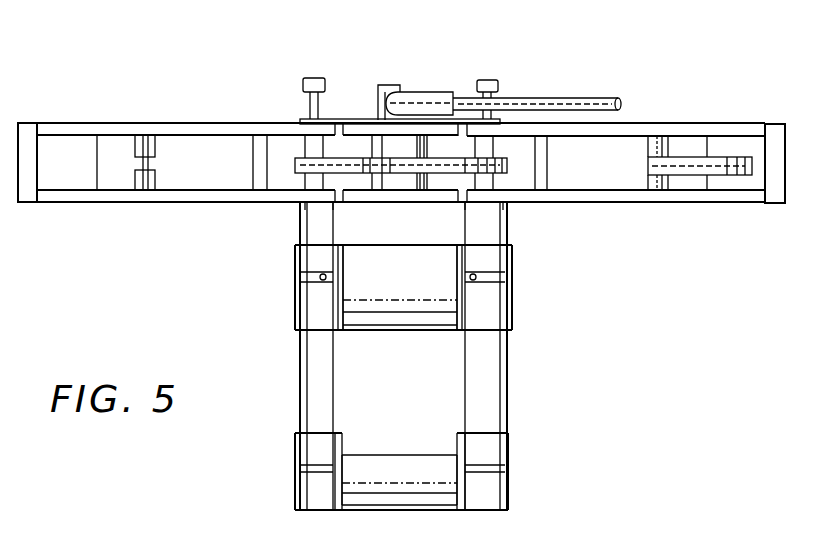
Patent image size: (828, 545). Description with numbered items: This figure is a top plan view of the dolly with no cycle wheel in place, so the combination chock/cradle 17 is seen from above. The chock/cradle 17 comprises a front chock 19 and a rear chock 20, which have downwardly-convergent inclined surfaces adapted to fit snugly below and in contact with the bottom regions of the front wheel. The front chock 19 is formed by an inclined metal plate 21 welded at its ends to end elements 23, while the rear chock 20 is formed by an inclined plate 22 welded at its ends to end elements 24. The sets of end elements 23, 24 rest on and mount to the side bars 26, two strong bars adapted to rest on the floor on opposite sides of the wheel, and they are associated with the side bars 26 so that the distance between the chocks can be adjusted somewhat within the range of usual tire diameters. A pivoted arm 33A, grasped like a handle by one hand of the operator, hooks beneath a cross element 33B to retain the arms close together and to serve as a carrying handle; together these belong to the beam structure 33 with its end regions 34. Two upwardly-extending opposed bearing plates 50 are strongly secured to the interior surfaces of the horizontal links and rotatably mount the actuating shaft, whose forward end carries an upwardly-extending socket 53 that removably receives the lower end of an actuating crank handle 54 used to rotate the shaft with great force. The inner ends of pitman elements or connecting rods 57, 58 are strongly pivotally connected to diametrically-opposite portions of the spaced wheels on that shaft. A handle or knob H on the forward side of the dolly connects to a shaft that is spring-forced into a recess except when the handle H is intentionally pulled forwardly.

The combination chock/cradle 17 is at (545, 417).
The front chock 19 is at (418, 333).
The rear chock 20 is at (388, 453).
The inclined metal plate 21 is at (415, 257).
The inclined plate 22 is at (422, 453).
The end elements 23 is at (302, 315).
The end elements 24 is at (298, 490).
The side bars 26 is at (300, 398).
The cross beam 33 is at (251, 116).
The pivoted arm 33A is at (717, 165).
The cross element 33B is at (155, 178).
The end cap 34 is at (75, 205).
The bearing plates 50 is at (362, 193).
The socket 53 is at (432, 102).
The actuating crank handle 54 is at (588, 102).
The pitman element 57 is at (507, 165).
The pitman element 58 is at (310, 166).
The handle H is at (302, 82).